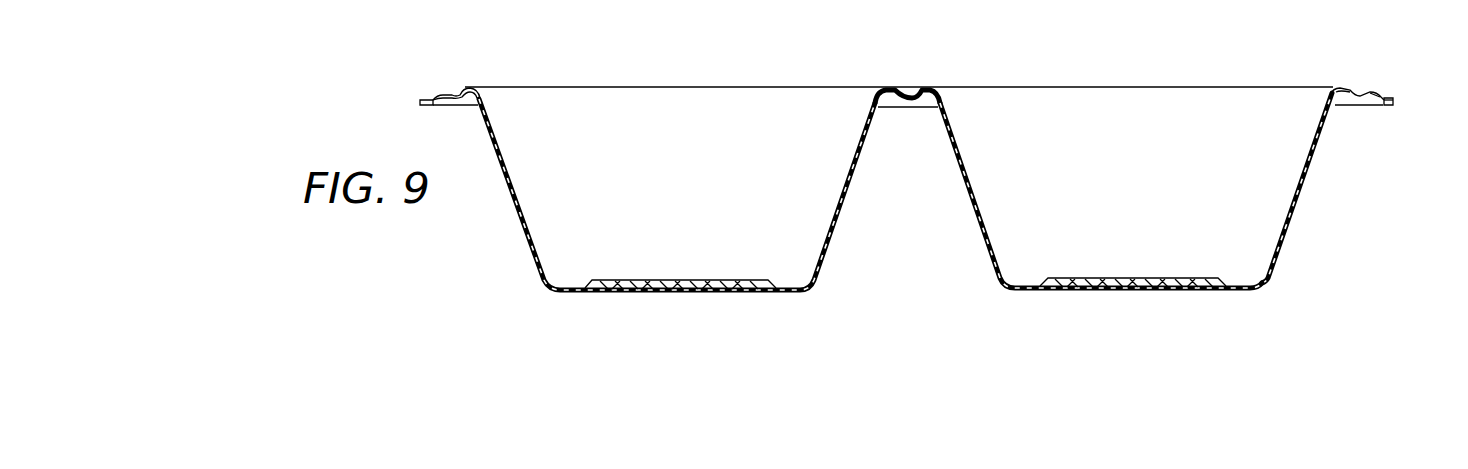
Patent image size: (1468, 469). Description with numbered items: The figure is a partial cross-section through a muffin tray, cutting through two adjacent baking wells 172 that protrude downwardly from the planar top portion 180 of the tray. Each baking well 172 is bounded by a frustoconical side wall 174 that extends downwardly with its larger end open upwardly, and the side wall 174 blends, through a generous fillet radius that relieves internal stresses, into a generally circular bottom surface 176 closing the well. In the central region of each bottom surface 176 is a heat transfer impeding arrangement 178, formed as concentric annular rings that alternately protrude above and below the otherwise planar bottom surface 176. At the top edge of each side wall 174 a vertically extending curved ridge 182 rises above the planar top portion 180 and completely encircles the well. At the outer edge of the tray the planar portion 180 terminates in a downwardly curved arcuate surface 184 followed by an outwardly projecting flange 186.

The baking well 172 is at (712, 121).
The frustoconical side wall 174 is at (1300, 194).
The bottom surface 176 is at (1233, 289).
The heat transfer impeding arrangement 178 is at (1134, 289).
The planar top portion 180 is at (1370, 88).
The ridge 182 is at (1348, 86).
The downwardly curved arcuate surface 184 is at (1382, 98).
The outwardly projecting flange 186 is at (1386, 106).